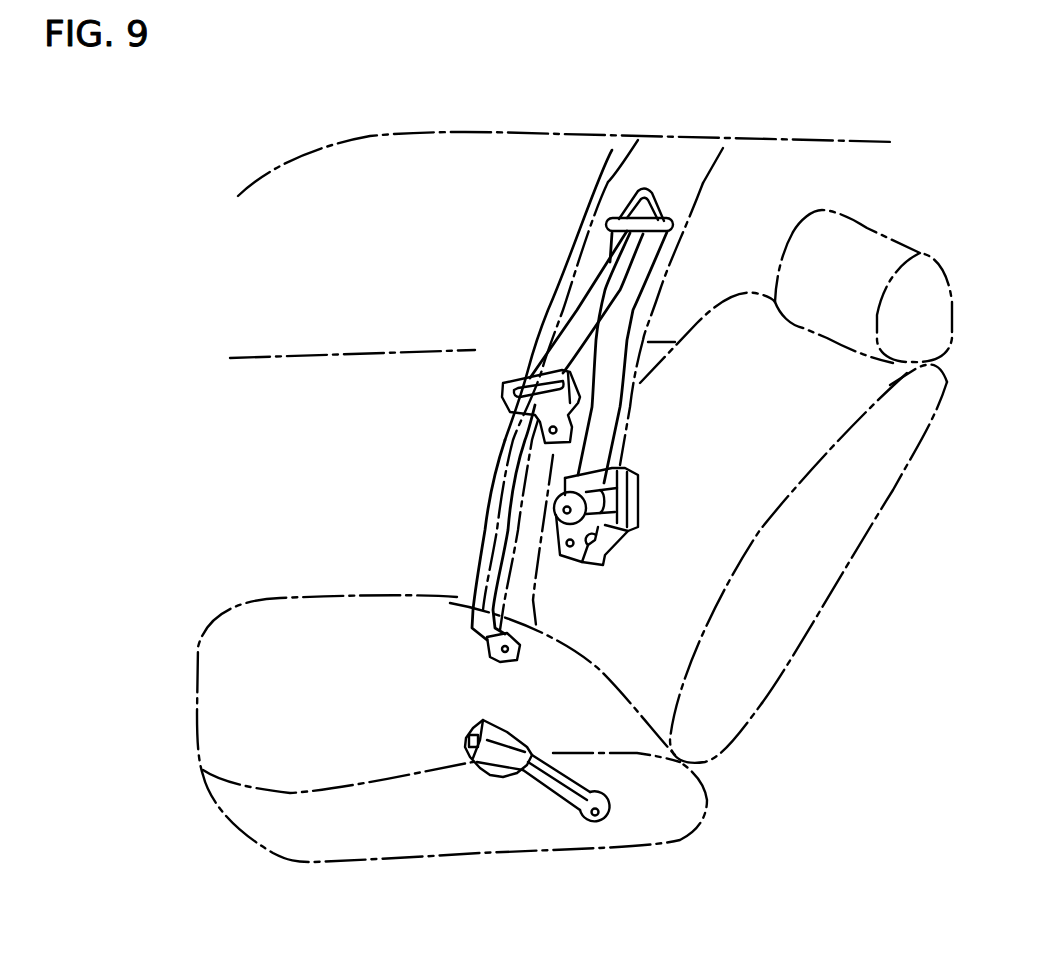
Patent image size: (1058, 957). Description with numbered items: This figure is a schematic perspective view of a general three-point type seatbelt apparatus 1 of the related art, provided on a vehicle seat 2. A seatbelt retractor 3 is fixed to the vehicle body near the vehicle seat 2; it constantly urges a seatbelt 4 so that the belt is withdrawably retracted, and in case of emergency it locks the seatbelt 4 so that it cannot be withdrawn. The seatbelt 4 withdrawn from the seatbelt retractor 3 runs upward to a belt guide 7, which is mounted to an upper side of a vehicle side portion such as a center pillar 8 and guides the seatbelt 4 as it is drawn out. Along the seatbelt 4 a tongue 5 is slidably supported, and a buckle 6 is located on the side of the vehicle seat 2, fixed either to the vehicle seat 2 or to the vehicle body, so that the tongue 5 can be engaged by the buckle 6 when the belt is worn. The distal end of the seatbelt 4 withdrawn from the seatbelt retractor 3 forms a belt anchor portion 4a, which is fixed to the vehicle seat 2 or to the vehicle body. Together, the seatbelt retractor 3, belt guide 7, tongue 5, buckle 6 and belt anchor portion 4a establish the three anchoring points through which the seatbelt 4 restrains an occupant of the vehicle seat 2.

The seatbelt apparatus 1 is at (680, 597).
The vehicle seat 2 is at (332, 833).
The seatbelt retractor 3 is at (637, 503).
The seatbelt 4 is at (587, 317).
The belt anchor portion 4a is at (510, 662).
The tongue 5 is at (502, 398).
The buckle 6 is at (473, 762).
The belt guide 7 is at (652, 196).
The center pillar 8 is at (712, 165).